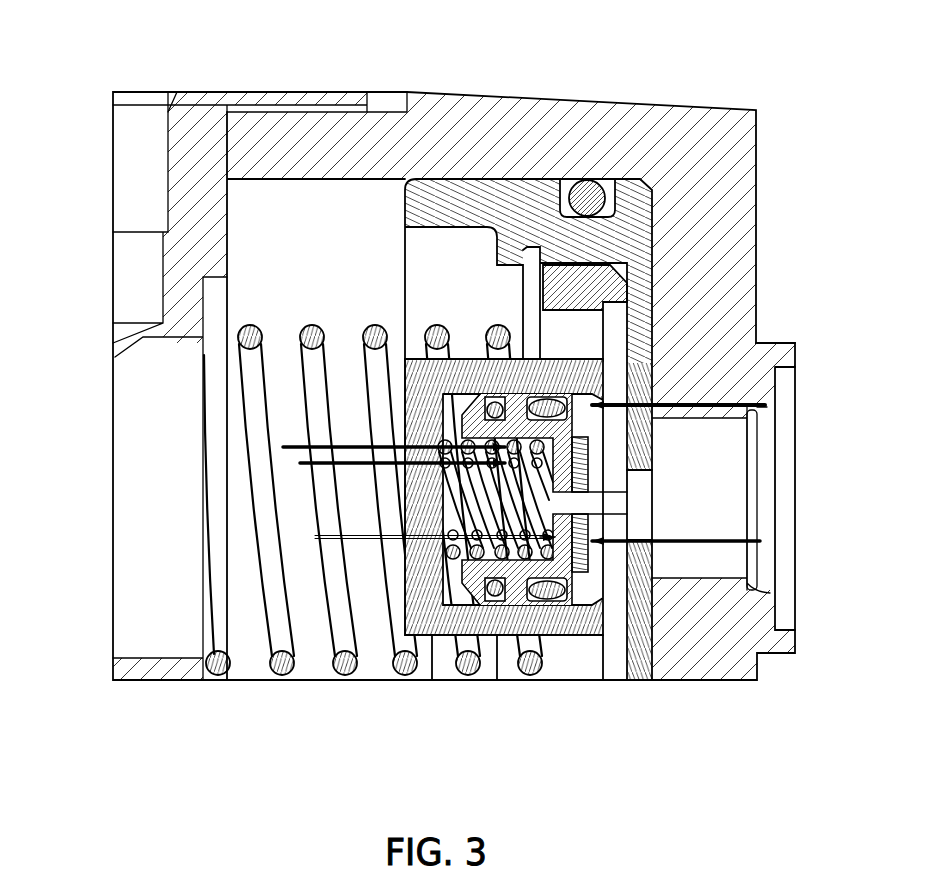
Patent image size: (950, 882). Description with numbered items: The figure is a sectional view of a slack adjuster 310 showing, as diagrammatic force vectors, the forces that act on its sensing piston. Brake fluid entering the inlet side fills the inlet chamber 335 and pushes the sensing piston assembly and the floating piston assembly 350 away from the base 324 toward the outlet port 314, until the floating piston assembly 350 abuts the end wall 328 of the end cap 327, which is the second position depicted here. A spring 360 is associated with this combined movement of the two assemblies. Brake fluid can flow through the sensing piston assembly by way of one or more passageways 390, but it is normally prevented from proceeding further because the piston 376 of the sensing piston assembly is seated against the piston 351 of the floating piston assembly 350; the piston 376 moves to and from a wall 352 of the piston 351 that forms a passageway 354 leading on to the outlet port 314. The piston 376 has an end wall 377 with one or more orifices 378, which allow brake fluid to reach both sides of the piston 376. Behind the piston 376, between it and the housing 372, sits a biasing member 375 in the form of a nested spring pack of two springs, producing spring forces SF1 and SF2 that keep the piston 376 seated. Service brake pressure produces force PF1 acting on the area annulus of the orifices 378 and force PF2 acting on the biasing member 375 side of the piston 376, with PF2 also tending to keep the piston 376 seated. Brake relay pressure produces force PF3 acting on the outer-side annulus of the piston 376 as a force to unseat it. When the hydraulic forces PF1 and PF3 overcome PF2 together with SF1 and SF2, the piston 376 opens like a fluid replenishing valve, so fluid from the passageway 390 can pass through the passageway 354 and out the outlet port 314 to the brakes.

The slack adjuster 310 is at (775, 78).
The outlet port 314 is at (775, 388).
The base 324 is at (182, 168).
The end cap 327 is at (697, 155).
The end wall 328 is at (653, 249).
The inlet chamber 335 is at (273, 197).
The floating piston assembly 350 is at (590, 178).
The piston 351 is at (528, 190).
The wall 352 is at (610, 458).
The passageway 354 is at (655, 512).
The spring 360 is at (275, 608).
The housing 372 is at (408, 580).
The biasing member 375 is at (447, 580).
The piston 376 is at (565, 522).
The end wall 377 is at (593, 565).
The orifices 378 is at (578, 592).
The passageway 390 is at (613, 395).
The spring force SF1 is at (394, 432).
The spring force SF2 is at (402, 480).
The service brake pressure force PF1 is at (726, 542).
The service brake pressure force PF2 is at (435, 554).
The brake relay pressure force PF3 is at (724, 407).